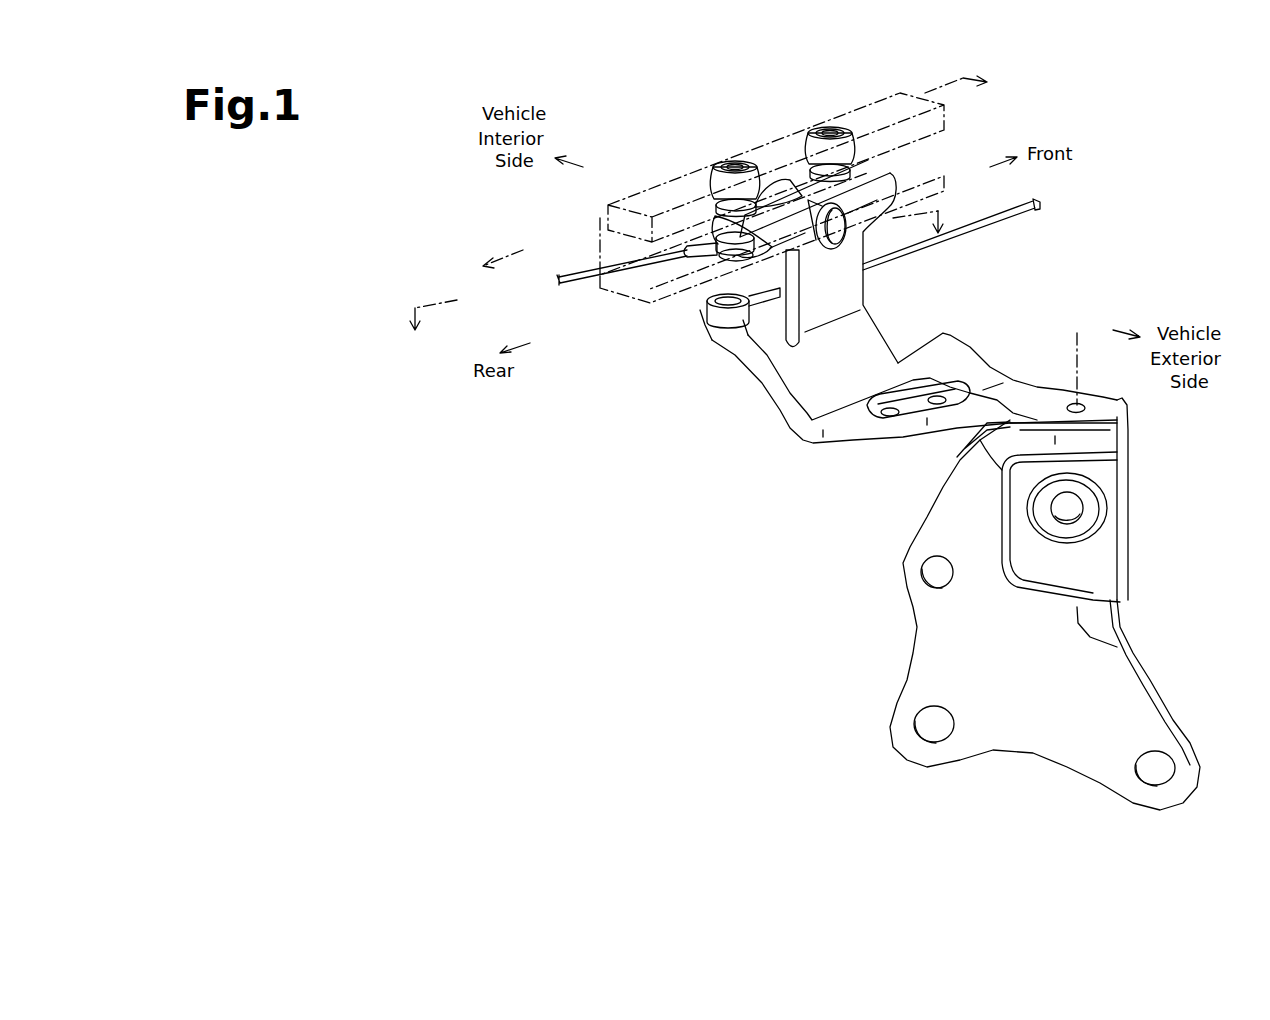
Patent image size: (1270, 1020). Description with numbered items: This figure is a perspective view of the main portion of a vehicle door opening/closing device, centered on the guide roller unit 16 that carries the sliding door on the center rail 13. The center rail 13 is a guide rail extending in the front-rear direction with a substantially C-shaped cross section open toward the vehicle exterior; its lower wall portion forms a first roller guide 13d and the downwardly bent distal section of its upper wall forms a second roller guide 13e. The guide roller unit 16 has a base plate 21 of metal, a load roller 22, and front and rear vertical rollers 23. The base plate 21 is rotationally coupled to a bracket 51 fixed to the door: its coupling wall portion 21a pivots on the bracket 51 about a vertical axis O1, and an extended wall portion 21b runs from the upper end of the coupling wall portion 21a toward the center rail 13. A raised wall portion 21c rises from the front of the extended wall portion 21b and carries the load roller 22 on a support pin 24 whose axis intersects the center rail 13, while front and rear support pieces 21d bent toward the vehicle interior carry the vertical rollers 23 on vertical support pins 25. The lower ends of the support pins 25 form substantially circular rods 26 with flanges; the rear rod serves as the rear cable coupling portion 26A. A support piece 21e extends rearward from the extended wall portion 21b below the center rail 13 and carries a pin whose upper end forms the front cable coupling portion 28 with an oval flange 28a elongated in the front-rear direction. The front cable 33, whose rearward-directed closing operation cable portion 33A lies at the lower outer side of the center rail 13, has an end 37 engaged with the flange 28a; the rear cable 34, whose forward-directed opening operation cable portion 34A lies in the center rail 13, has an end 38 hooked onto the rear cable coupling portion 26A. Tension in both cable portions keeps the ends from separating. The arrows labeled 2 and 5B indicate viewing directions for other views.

The section line / viewing direction 2 is at (731, 179).
The section line 5B is at (672, 269).
The center rail 13 is at (752, 208).
The second roller guide 13e is at (633, 205).
The first roller guide 13d is at (627, 293).
The guide roller unit 16 is at (935, 475).
The base plate 21 is at (931, 370).
The coupling wall portion 21a is at (1130, 420).
The extended wall portion 21b is at (787, 390).
The raised wall portion 21c is at (875, 244).
The support pieces 21d is at (723, 227).
The support piece 21e is at (718, 347).
The load roller 22 is at (780, 178).
The vertical rollers 23 is at (755, 203).
The support pin 24 is at (837, 241).
The support pins 25 is at (734, 160).
The rods 26 is at (651, 242).
The rear cable coupling portion 26A is at (715, 249).
The front cable coupling portion 28 is at (688, 337).
The flange 28a is at (717, 317).
The front cable 33 is at (973, 234).
The closing operation cable portion 33A is at (1013, 222).
The rear cable 34 is at (593, 290).
The opening operation cable portion 34A is at (560, 283).
The end 37 is at (710, 323).
The end 38 is at (699, 260).
The bracket 51 is at (918, 638).
The axis O1 is at (1080, 372).